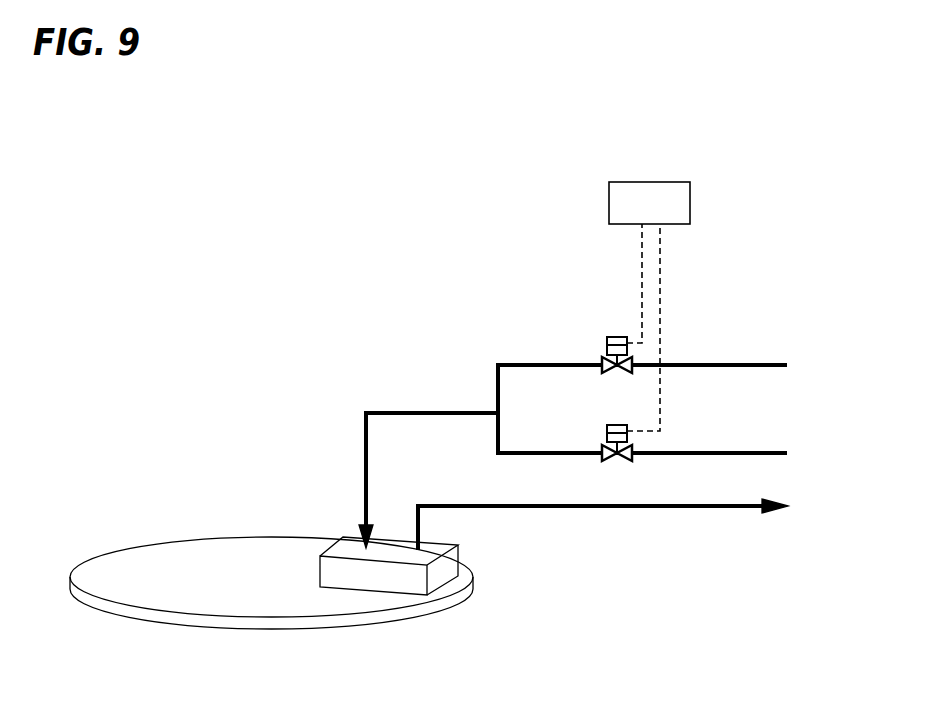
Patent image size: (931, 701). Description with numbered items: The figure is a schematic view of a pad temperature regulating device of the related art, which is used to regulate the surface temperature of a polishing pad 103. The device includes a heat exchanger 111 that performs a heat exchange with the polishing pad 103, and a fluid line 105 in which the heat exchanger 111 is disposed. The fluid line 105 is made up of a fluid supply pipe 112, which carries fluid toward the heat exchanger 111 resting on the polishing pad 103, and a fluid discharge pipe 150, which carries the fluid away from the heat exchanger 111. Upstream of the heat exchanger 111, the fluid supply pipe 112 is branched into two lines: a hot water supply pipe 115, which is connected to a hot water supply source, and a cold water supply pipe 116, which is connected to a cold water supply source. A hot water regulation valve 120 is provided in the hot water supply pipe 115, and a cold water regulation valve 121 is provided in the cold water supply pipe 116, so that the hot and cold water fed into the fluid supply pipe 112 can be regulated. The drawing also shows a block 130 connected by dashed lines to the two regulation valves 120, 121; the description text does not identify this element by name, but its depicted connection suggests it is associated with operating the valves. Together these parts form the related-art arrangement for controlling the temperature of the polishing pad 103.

The polishing pad 103 is at (214, 557).
The fluid line 105 is at (342, 372).
The heat exchanger 111 is at (393, 550).
The fluid supply pipe 112 is at (428, 412).
The hot water supply pipe 115 is at (703, 363).
The cold water supply pipe 116 is at (715, 452).
The hot water regulation valve 120 is at (617, 337).
The cold water regulation valve 121 is at (622, 424).
The controller 130 is at (642, 182).
The fluid discharge pipe 150 is at (592, 508).